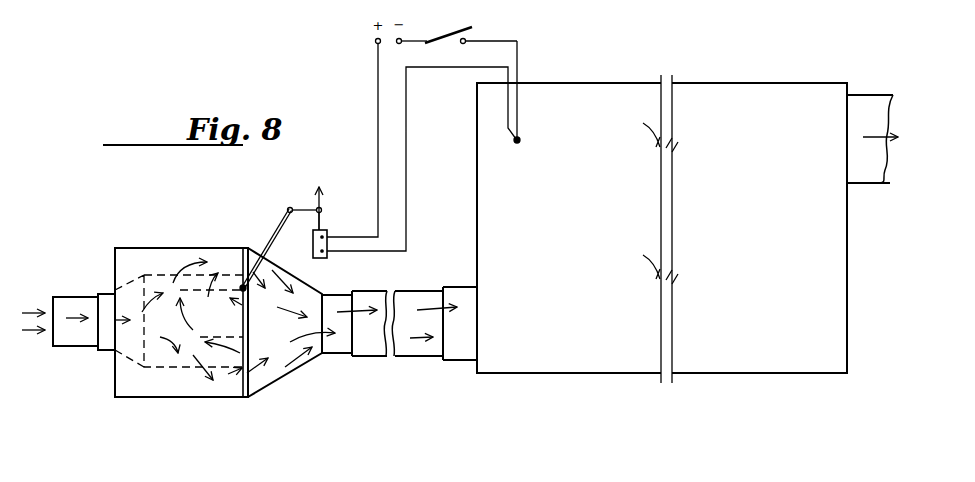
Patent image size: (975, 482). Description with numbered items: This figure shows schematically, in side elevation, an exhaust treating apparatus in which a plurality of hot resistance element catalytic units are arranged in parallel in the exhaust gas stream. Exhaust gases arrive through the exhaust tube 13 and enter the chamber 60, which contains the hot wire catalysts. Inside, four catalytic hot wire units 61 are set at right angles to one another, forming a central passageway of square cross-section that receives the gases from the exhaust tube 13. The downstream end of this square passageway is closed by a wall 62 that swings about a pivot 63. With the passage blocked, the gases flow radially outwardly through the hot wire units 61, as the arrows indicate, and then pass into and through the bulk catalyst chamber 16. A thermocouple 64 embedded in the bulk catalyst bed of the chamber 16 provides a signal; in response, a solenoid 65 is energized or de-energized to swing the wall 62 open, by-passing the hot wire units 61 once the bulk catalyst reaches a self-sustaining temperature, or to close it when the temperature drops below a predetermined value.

The exhaust tube 13 is at (66, 303).
The bulk catalyst chamber 16 is at (602, 229).
The chamber 60 is at (168, 262).
The catalytic hot wire unit 61 is at (163, 357).
The wall 62 is at (233, 333).
The pivot 63 is at (243, 285).
The thermocouple 64 is at (520, 138).
The solenoid 65 is at (318, 259).